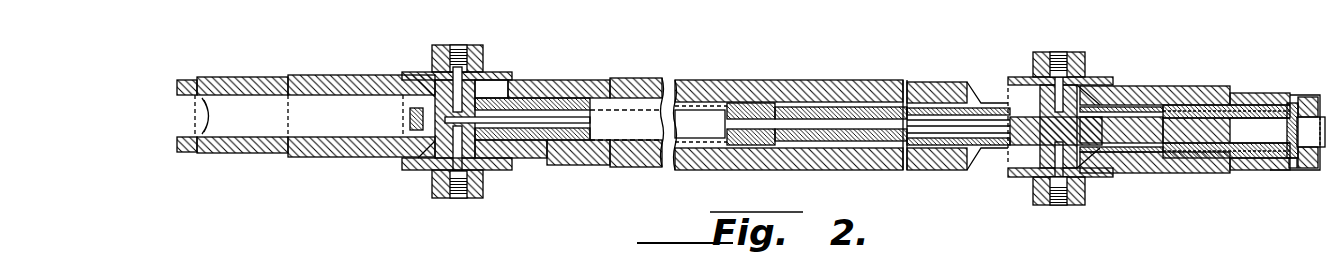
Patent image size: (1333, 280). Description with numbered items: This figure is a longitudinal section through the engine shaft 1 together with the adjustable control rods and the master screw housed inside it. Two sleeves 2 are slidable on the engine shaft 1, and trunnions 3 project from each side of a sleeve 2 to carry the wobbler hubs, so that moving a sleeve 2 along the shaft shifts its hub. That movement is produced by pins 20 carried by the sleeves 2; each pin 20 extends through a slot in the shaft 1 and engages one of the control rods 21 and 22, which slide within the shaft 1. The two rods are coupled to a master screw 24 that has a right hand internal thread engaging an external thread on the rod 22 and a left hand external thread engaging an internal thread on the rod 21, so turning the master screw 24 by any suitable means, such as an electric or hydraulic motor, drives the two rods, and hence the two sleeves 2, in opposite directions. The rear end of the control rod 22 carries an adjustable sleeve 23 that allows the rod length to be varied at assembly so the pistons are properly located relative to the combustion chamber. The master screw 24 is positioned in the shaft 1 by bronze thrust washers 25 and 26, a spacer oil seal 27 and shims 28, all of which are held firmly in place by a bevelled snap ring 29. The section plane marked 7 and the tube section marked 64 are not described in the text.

The engine shaft 1 is at (728, 80).
The sleeve 2 is at (1020, 175).
The trunnions 3 is at (1036, 70).
The section line 7- 7 is at (1034, 31).
The pins 20 is at (1057, 126).
The control rod 21 is at (1130, 112).
The control rod 22 is at (812, 112).
The adjustable sleeve 23 is at (524, 140).
The master screw 24 is at (1197, 112).
The bronze thrust washer 25 is at (1288, 103).
The bronze thrust washer 26 is at (1306, 96).
The spacer oil seal 27 is at (1293, 168).
The shims 28 is at (1287, 171).
The bevelled snap ring 29 is at (1320, 168).
The tube section 64 is at (522, 93).